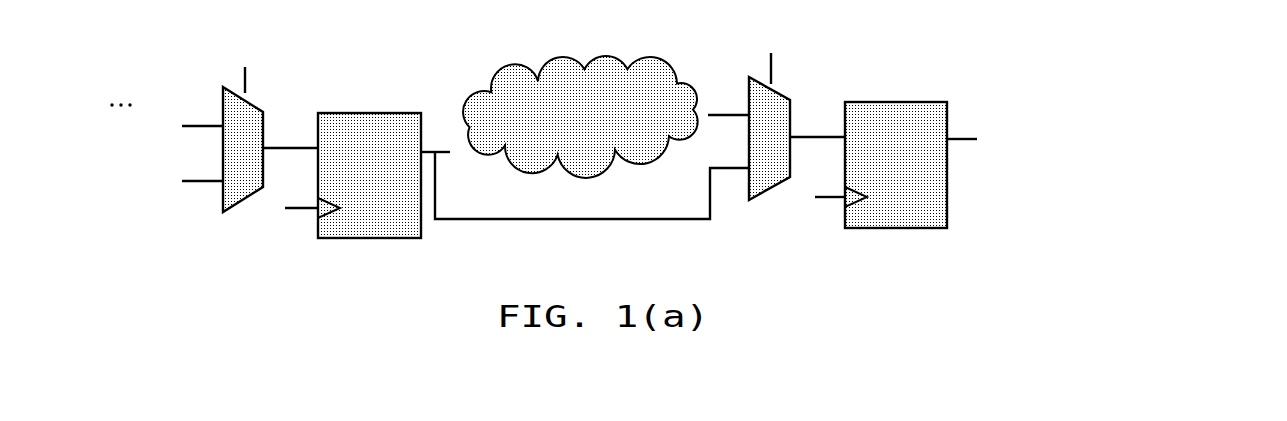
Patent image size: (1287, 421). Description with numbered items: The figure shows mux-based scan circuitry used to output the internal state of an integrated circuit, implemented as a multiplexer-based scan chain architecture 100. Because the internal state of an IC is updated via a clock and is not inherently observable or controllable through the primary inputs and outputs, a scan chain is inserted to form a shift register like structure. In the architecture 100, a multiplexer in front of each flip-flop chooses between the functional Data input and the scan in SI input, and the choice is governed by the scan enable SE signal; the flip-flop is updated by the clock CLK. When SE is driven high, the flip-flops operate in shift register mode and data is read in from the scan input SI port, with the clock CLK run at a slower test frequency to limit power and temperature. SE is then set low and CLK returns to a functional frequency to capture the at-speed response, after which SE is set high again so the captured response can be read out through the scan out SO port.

The multiplexer-based scan chain architecture 100 is at (1208, 315).
The scan enable signal SE is at (506, 56).
The data Data is at (188, 105).
The scan in signal SI is at (196, 162).
The clock signal CLK is at (598, 204).
The scan out signal SO is at (976, 120).